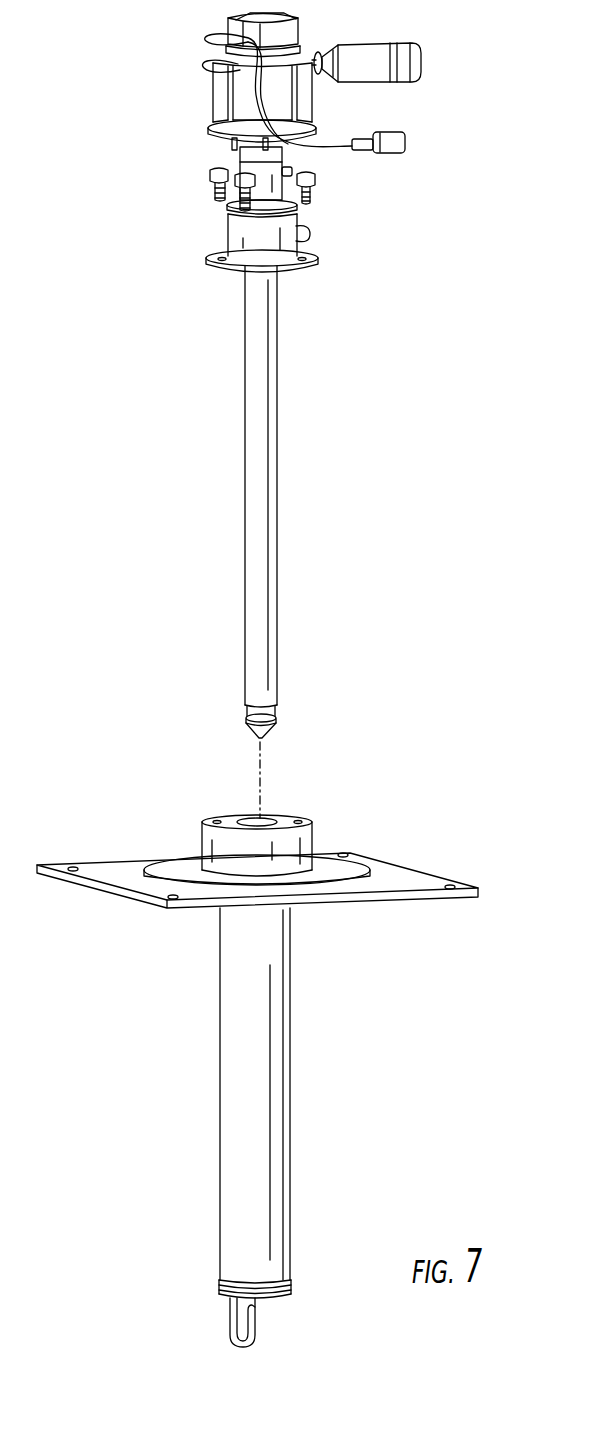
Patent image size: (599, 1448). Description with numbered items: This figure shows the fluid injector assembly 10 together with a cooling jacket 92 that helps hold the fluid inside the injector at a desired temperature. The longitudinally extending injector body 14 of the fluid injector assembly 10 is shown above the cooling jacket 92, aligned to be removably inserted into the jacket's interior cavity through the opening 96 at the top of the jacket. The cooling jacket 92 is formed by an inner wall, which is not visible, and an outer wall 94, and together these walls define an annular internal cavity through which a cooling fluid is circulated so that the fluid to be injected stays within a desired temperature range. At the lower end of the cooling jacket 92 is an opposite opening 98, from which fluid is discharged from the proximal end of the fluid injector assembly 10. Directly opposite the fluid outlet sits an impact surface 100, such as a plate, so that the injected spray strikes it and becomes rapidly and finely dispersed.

The fluid injector assembly 10 is at (398, 294).
The injector body 14 is at (268, 485).
The opening 96 is at (268, 822).
The cooling jacket 92 is at (288, 1055).
The outer wall 94 is at (233, 1112).
The opposite opening 98 is at (272, 1309).
The impact surface 100 is at (257, 1328).